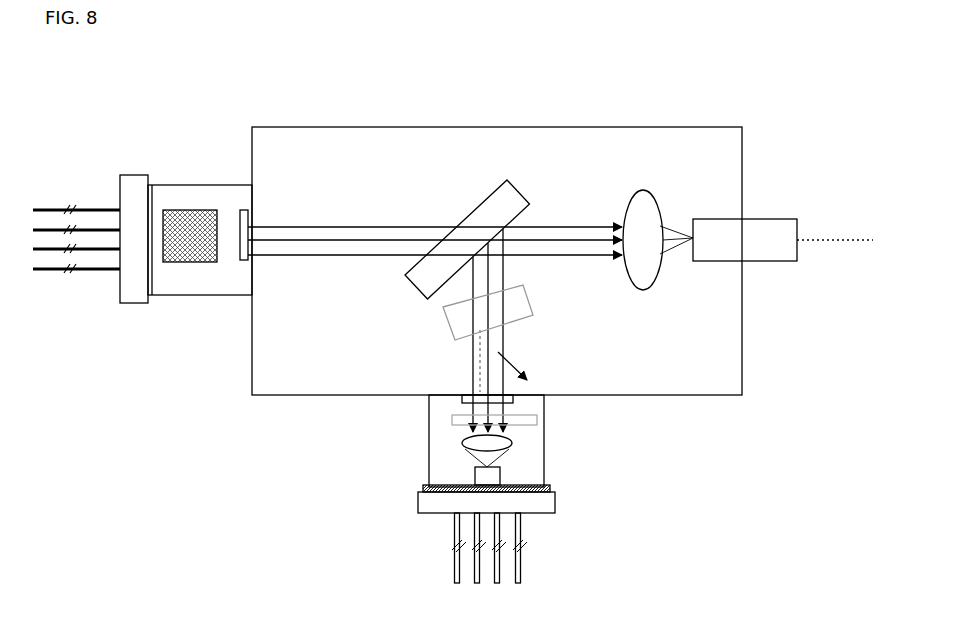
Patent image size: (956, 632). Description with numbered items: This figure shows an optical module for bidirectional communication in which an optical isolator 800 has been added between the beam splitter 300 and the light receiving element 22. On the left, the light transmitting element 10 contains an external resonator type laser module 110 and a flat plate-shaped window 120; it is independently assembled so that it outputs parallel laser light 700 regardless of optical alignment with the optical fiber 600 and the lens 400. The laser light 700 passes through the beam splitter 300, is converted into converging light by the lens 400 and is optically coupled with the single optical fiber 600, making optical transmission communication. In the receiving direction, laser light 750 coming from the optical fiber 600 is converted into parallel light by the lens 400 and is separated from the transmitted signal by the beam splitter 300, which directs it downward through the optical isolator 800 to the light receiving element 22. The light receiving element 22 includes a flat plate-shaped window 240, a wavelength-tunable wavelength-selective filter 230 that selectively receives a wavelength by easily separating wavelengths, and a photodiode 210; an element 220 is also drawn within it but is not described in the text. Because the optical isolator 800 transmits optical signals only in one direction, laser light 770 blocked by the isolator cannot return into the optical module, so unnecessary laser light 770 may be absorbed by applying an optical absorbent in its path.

The light transmitting element 10 is at (177, 182).
The external resonator type laser module 110 is at (175, 272).
The flat plate-shaped window of light transmitting element 120 is at (233, 272).
The laser light traveling to optical fiber from light transmitting element 700 is at (347, 222).
The beam splitter 300 is at (523, 182).
The lens 400 is at (657, 190).
The optical fiber 600 is at (773, 270).
The laser light traveling to light receiving element from optical fiber 750 is at (514, 273).
The laser light reflecting from optical isolator 770 is at (522, 366).
The optical isolator 800 is at (438, 332).
The photodiode 210 is at (540, 510).
The light receiving element having built-in wavelength-tunable wavelength-selective 22 is at (436, 548).
The flat plate-shaped window of light receiving element 240 is at (448, 403).
The lens 220 is at (446, 452).
The wavelength-tunable wavelength-selective filter 230 is at (546, 418).